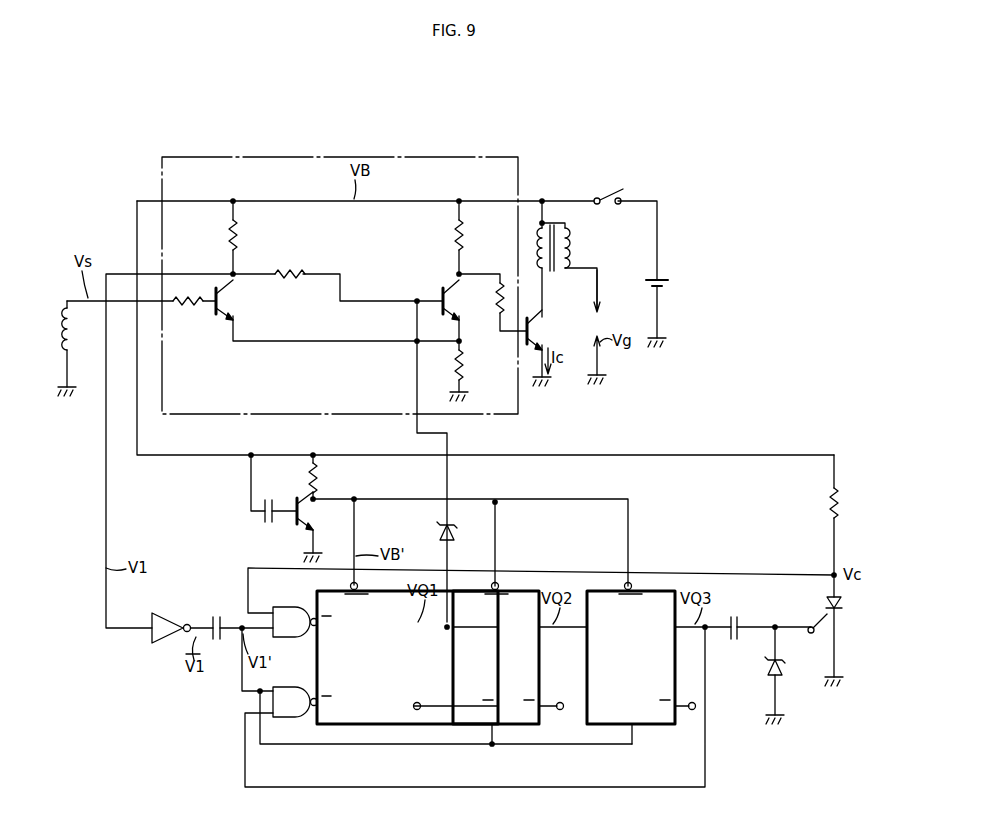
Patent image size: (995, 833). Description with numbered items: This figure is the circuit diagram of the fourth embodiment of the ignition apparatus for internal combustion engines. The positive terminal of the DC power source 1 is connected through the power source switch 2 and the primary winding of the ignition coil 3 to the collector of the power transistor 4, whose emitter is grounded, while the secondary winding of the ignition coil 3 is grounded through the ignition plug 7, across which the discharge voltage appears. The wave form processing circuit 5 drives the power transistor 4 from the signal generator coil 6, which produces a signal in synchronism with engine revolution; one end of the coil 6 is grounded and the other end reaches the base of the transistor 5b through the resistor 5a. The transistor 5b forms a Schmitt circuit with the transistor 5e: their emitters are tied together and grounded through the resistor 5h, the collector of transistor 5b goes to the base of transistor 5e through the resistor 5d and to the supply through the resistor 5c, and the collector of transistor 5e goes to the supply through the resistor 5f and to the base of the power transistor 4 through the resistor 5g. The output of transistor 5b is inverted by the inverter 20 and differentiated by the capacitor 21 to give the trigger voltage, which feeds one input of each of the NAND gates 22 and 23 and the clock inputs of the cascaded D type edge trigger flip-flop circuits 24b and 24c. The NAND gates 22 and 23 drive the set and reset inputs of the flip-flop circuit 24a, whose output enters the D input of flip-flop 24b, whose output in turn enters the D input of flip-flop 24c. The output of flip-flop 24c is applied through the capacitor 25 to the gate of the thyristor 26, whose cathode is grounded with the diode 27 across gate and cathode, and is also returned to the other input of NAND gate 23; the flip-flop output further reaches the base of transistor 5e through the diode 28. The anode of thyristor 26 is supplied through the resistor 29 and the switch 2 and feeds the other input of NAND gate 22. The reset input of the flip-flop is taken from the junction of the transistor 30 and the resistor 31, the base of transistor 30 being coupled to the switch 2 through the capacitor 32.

The DC power source 1 is at (666, 282).
The power source switch 2 is at (607, 194).
The ignition coil 3 is at (548, 228).
The power transistor 4 is at (538, 326).
The wave form processing circuit 5 is at (380, 157).
The resistor 5a is at (191, 315).
The transistor 5b is at (236, 300).
The resistor 5c is at (240, 232).
The resistor 5d is at (296, 270).
The transistor 5e is at (446, 290).
The resistor 5f is at (452, 243).
The resistor 5g is at (497, 300).
The resistor 5h is at (464, 364).
The signal generator coil 6 is at (62, 333).
The ignition plug 7 is at (602, 316).
The inverter 20 is at (164, 641).
The capacitor 21 is at (216, 614).
The NAND gate 22 is at (288, 606).
The NAND gate 23 is at (291, 686).
The flip-flop circuit 24a is at (386, 726).
The D type edge trigger flip-flop circuit 24b is at (526, 728).
The D type edge trigger flip-flop circuit 24c is at (658, 726).
The capacitor 25 is at (734, 614).
The thyristor 26 is at (842, 602).
The diode 27 is at (767, 672).
The diode 28 is at (440, 536).
The resistor 29 is at (842, 498).
The transistor 30 is at (308, 510).
The resistor 31 is at (320, 476).
The capacitor 32 is at (268, 524).